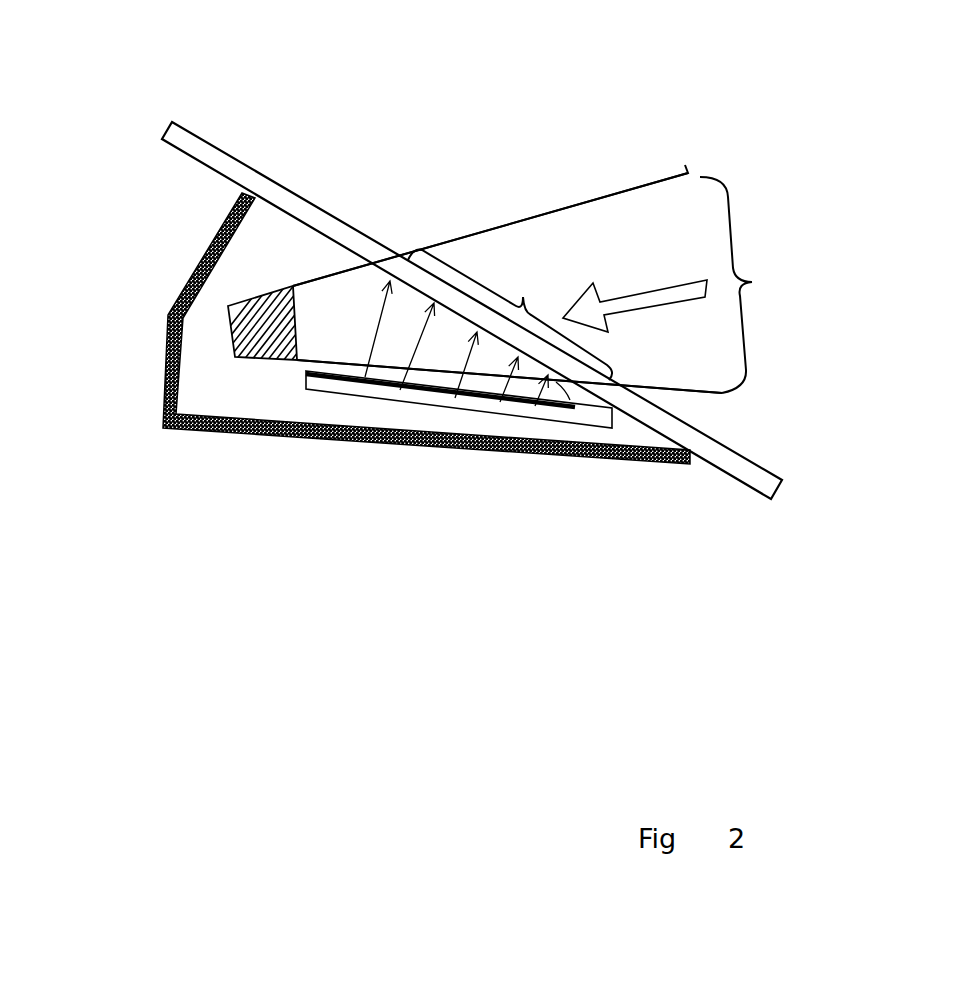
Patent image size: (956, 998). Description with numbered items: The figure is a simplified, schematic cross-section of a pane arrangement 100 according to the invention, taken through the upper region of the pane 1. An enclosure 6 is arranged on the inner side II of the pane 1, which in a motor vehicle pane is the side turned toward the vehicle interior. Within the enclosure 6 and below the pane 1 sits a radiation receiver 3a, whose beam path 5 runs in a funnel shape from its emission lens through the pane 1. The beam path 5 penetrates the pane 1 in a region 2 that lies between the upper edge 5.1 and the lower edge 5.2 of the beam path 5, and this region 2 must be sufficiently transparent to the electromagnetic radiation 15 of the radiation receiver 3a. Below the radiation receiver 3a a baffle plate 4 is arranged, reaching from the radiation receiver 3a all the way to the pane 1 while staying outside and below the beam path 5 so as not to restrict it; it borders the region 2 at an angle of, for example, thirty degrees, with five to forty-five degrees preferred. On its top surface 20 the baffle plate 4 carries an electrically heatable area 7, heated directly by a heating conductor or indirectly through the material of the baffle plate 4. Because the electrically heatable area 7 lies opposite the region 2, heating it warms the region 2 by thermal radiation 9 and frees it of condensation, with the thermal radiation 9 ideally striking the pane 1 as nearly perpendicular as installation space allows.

The pane arrangement 100 is at (545, 112).
The pane 1 is at (178, 128).
The region 2 is at (510, 314).
The radiation receiver 3a is at (228, 318).
The baffle plate 4 is at (438, 397).
The beam path 5 is at (543, 283).
The upper edge of the beam path 5.1 is at (680, 173).
The lower edge of the beam path 5.2 is at (722, 393).
The enclosure 6 is at (215, 432).
The electrically heatable area 7 is at (478, 393).
The thermal radiation 9 is at (362, 375).
The electromagnetic radiation 15 is at (625, 303).
The top surface 20 is at (327, 368).
The inner side II is at (762, 496).